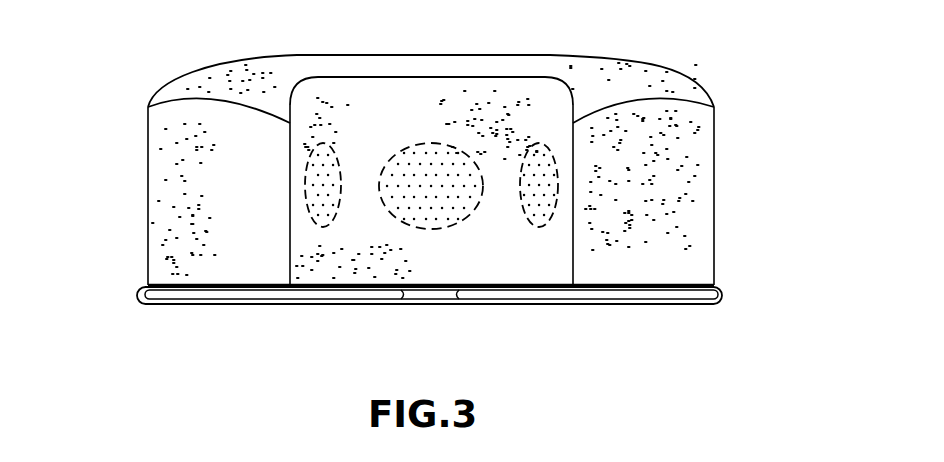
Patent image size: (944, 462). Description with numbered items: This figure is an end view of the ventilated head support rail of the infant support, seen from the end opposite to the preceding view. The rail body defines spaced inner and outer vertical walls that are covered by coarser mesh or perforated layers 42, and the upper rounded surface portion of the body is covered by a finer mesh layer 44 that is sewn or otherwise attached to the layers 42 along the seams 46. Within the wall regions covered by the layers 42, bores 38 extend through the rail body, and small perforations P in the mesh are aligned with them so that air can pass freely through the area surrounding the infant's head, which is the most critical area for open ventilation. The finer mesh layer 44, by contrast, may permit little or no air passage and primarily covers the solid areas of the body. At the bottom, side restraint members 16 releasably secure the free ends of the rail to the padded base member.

The bores 38 is at (540, 147).
The finer mesh layer 44 is at (677, 84).
The seams 46 is at (712, 100).
The mesh or perforated layers 42 is at (665, 193).
The perforations P is at (317, 183).
The side restraint members 16 is at (140, 293).